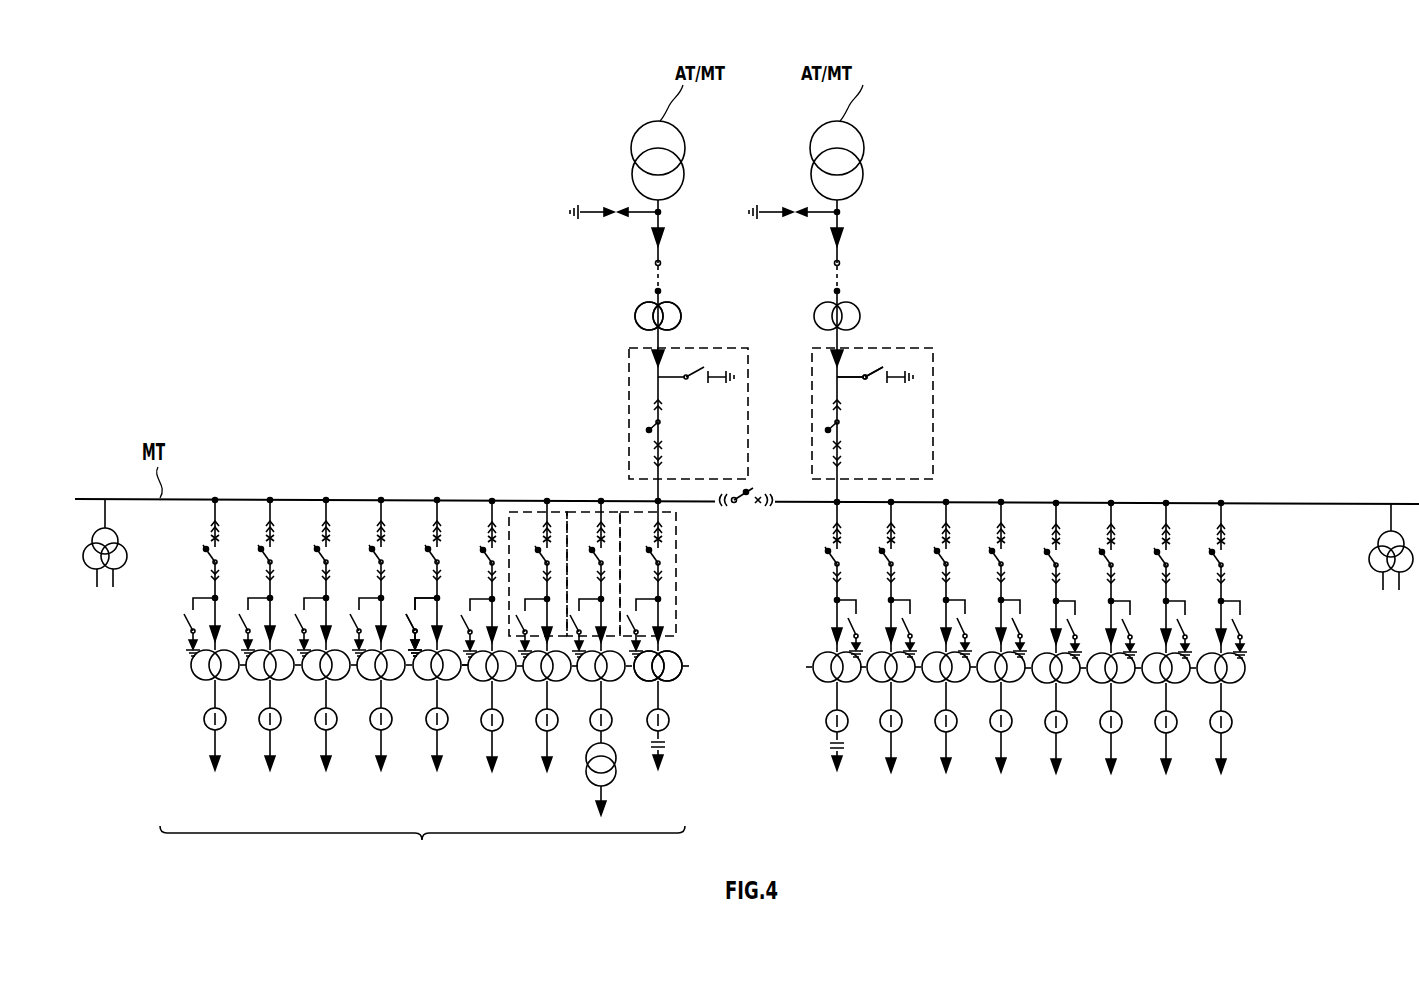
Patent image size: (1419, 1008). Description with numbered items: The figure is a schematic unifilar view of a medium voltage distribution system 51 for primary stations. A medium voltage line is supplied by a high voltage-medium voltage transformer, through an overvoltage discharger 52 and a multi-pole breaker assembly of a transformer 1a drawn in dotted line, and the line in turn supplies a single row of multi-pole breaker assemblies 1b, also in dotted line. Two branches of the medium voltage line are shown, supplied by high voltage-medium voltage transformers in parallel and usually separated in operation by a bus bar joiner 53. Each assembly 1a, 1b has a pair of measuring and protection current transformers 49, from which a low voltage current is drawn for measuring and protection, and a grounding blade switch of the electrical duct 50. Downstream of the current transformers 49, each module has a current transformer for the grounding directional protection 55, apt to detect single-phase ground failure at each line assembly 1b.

The multi-pole breaker assembly of a transformer 1a is at (697, 348).
The multi-pole breaker assembly 1b is at (680, 614).
The measuring and protection current transformer 49 is at (634, 316).
The grounding blade switch of the electrical duct 50 is at (903, 382).
The medium voltage distribution system 51 is at (422, 849).
The overvoltage discharger 52 is at (605, 215).
The bus bar joiner 53 is at (736, 506).
The current transformer for the grounding directional protection 55 is at (666, 722).